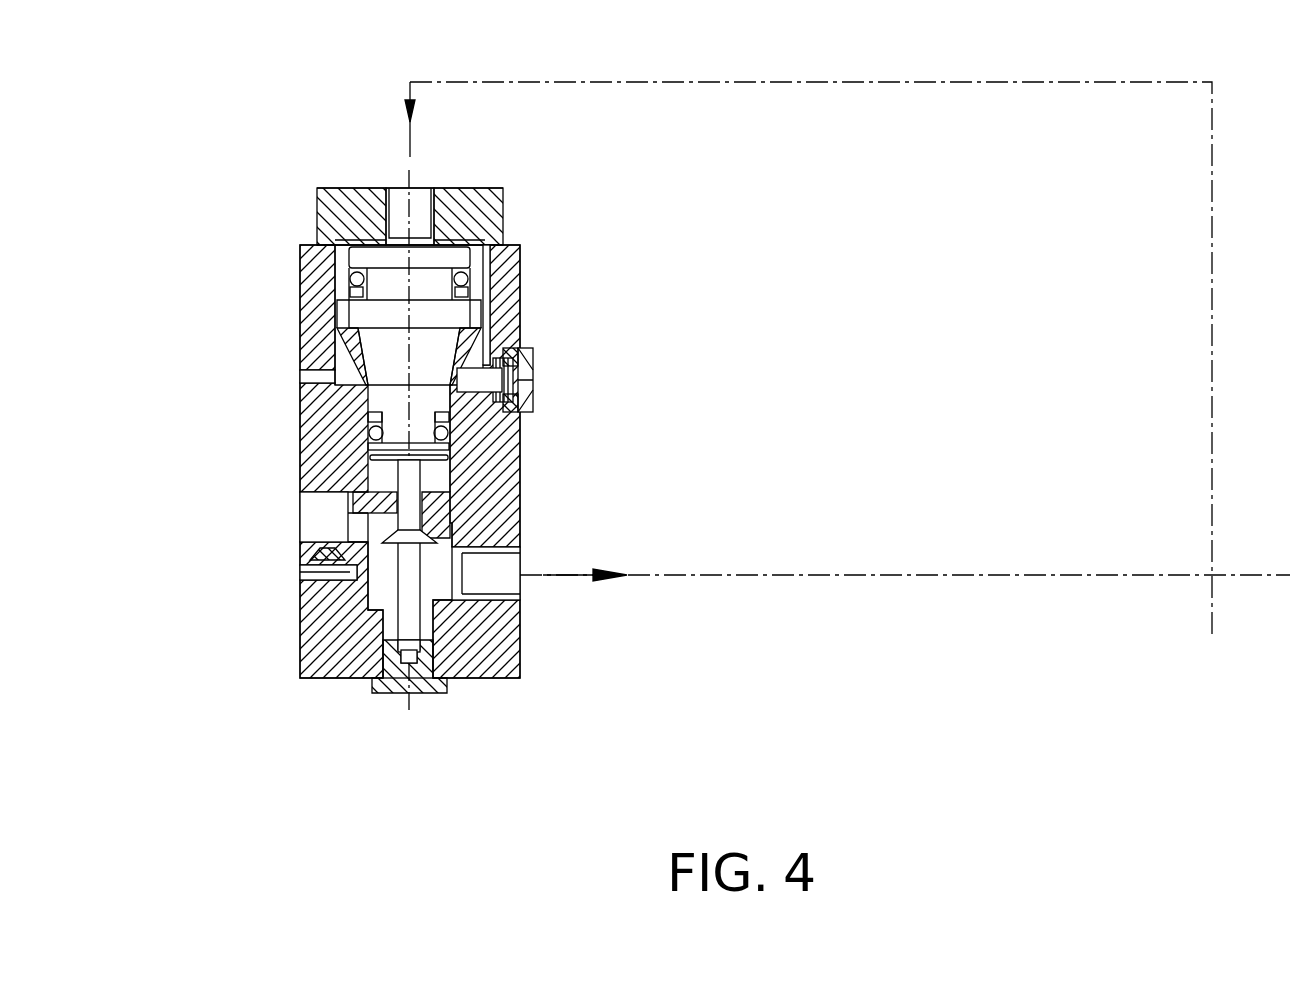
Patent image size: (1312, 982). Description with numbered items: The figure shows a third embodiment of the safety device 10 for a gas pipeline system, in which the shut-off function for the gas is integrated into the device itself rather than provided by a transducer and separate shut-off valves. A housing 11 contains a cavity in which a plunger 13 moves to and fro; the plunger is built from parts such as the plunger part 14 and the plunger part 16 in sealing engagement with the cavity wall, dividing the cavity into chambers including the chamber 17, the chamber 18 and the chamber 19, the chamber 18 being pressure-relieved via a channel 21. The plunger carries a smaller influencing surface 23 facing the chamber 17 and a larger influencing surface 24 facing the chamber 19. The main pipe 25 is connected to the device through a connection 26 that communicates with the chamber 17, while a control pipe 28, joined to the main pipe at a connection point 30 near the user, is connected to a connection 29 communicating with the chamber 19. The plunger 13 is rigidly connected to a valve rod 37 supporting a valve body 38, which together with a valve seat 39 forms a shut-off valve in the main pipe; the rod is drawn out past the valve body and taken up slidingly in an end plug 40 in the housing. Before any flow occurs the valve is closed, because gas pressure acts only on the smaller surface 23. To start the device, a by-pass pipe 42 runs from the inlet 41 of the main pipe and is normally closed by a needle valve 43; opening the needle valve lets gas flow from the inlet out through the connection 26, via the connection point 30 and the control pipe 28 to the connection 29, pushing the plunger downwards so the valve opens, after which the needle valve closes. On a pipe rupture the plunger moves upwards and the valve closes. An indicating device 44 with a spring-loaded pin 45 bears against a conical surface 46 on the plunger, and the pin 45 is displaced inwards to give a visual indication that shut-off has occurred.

The safety device 10 is at (336, 178).
The housing 11 is at (318, 622).
The plunger 13 is at (314, 395).
The plunger part 14 is at (456, 444).
The plunger part 16 is at (471, 288).
The chamber 17 is at (460, 488).
The chamber 18 is at (348, 352).
The chamber 19 is at (502, 244).
The channel 21 is at (312, 378).
The influencing surface 23 is at (444, 486).
The influencing surface 24 is at (358, 219).
The main pipe 25 is at (658, 582).
The connection 26 is at (510, 586).
The control pipe 28 is at (593, 82).
The connection 29 is at (418, 189).
The connection point 30 is at (1212, 598).
The valve rod 37 is at (302, 472).
The valve body 38 is at (330, 524).
The valve seat 39 is at (458, 523).
The end plug 40 is at (418, 690).
The inlet 41 is at (316, 512).
The by-pass pipe 42 is at (312, 550).
The needle valve 43 is at (310, 584).
The indicating device 44 is at (534, 369).
The spring-loaded pin 45 is at (522, 393).
The conical surface 46 is at (511, 345).